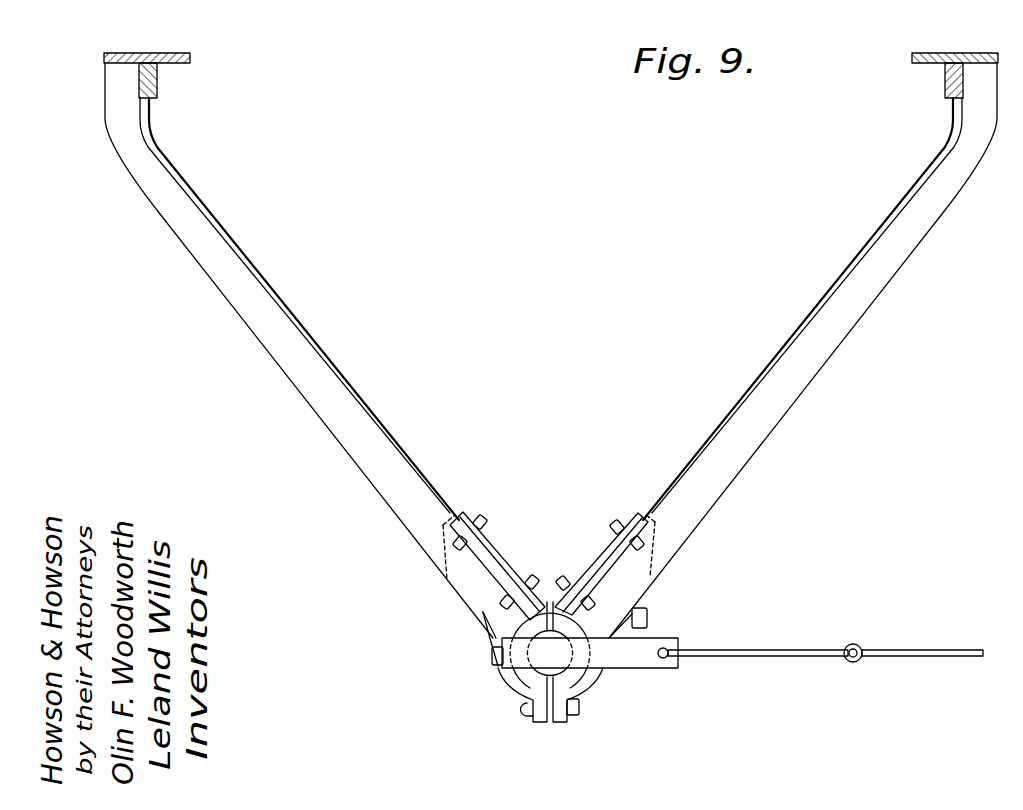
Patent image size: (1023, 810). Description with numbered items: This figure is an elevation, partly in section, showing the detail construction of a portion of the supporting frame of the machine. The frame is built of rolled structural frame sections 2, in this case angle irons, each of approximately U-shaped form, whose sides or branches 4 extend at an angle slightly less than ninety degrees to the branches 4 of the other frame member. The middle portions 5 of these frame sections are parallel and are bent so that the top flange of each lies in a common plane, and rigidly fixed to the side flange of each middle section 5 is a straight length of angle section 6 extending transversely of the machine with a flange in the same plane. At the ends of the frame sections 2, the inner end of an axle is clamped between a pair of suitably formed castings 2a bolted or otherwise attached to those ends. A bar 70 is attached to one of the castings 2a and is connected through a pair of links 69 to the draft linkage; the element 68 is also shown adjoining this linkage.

The frame structure 2 is at (232, 236).
The castings 2a is at (527, 682).
The branches 4 is at (294, 322).
The middle portions 5 is at (118, 55).
The angle section 6 is at (178, 48).
The rod 68 is at (918, 658).
The links 69 is at (757, 658).
The bar 70 is at (653, 668).